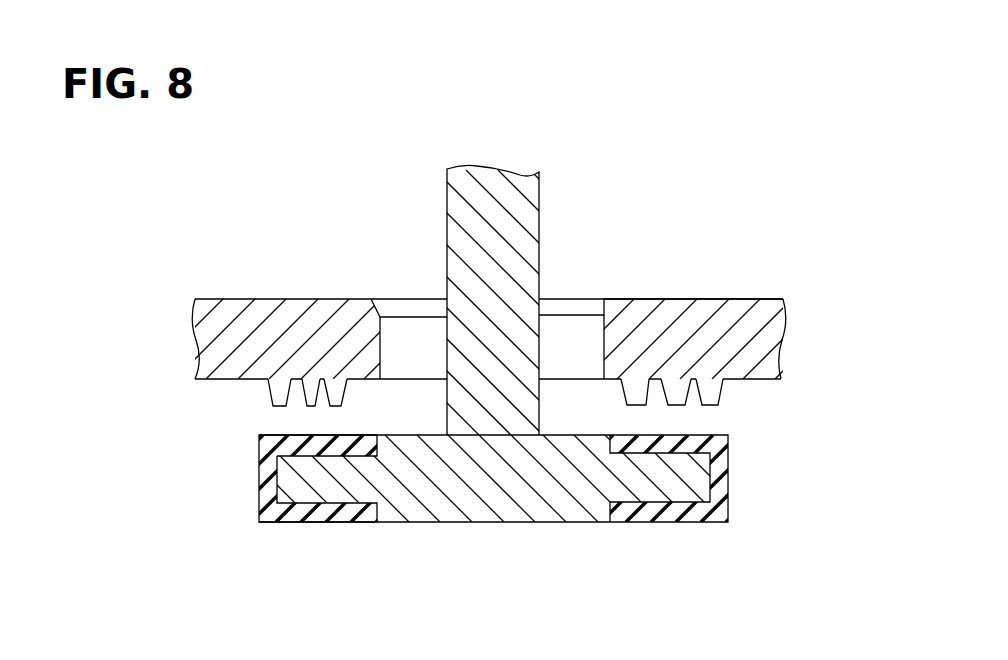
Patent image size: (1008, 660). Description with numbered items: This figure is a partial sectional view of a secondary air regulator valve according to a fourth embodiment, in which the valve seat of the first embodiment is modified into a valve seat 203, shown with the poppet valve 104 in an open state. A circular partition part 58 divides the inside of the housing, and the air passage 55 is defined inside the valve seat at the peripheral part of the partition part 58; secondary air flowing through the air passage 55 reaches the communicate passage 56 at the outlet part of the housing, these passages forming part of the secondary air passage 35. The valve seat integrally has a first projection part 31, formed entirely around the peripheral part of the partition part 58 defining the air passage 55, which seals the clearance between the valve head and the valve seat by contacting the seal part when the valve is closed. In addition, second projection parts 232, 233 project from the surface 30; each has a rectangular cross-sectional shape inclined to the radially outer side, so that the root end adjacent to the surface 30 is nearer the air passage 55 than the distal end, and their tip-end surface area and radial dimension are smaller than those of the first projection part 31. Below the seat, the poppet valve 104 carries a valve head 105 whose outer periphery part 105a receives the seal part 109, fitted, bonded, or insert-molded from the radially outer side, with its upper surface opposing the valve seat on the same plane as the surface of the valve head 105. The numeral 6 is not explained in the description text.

The shaft 6 is at (460, 215).
The secondary air passage 35 is at (565, 220).
The air passage 55 is at (572, 325).
The partition part 58 is at (748, 320).
The surface 30 is at (778, 393).
The valve seat 203 is at (755, 397).
The second projection part 233 is at (271, 400).
The second projection part 232 is at (308, 405).
The first projection part 31 is at (353, 398).
The poppet valve 104 is at (692, 537).
The valve head 105 is at (488, 490).
The outer periphery part 105a is at (290, 480).
The seal part 109 is at (316, 513).
The communicate passage 56 is at (767, 495).